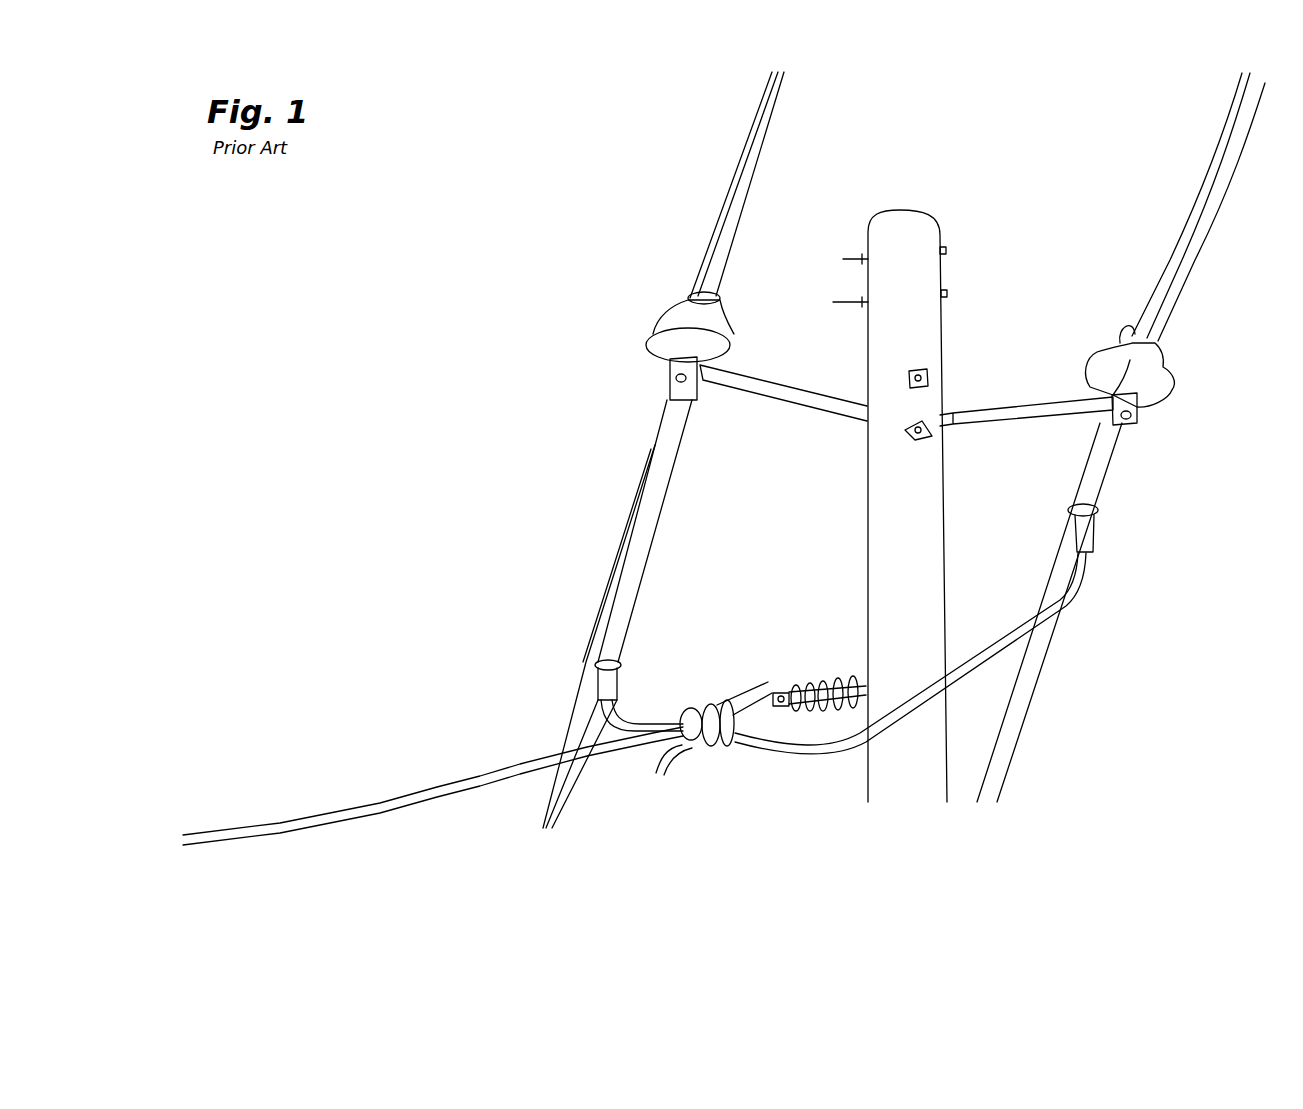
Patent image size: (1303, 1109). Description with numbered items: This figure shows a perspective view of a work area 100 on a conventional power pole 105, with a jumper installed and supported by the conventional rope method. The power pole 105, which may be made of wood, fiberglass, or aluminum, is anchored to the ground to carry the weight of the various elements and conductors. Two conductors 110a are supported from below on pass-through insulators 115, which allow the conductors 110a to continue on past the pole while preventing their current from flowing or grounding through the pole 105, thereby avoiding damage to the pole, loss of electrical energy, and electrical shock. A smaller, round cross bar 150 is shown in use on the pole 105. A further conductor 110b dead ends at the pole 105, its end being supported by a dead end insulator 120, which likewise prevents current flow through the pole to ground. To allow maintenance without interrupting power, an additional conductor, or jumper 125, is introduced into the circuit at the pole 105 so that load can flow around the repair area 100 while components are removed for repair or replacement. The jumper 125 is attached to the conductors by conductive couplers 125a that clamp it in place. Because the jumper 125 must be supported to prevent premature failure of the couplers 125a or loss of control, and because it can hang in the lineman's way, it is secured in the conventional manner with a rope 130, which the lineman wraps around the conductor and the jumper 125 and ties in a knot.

The work area 100 is at (495, 250).
The power pole 105 is at (900, 208).
The conductor 110a is at (637, 475).
The conductor 110b is at (437, 783).
The pass-through insulator 115 is at (650, 332).
The dead end insulator 120 is at (838, 668).
The jumper 125 is at (768, 752).
The coupler 125a is at (625, 676).
The rope 130 is at (693, 753).
The cross bar 150 is at (820, 390).